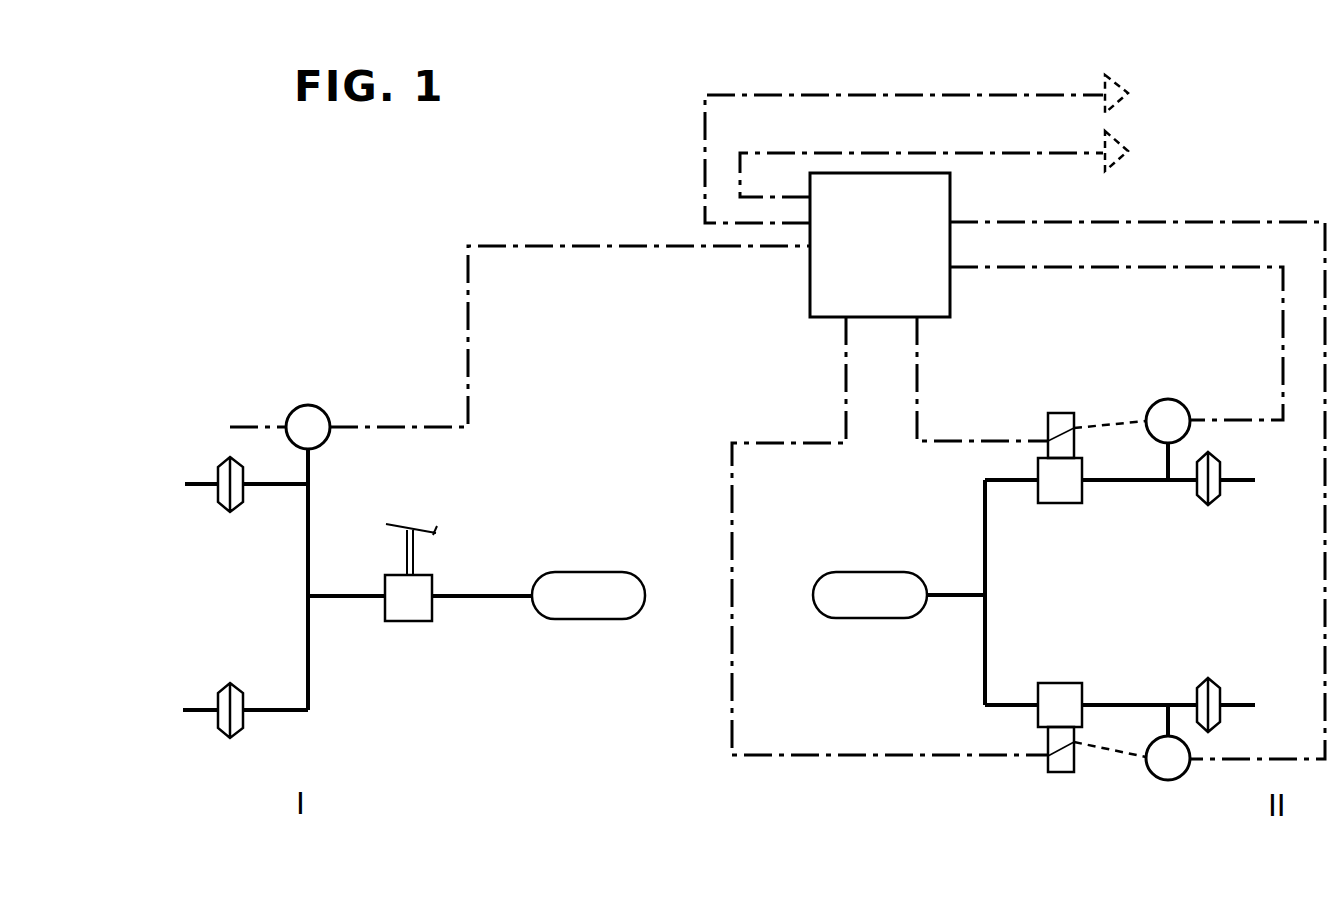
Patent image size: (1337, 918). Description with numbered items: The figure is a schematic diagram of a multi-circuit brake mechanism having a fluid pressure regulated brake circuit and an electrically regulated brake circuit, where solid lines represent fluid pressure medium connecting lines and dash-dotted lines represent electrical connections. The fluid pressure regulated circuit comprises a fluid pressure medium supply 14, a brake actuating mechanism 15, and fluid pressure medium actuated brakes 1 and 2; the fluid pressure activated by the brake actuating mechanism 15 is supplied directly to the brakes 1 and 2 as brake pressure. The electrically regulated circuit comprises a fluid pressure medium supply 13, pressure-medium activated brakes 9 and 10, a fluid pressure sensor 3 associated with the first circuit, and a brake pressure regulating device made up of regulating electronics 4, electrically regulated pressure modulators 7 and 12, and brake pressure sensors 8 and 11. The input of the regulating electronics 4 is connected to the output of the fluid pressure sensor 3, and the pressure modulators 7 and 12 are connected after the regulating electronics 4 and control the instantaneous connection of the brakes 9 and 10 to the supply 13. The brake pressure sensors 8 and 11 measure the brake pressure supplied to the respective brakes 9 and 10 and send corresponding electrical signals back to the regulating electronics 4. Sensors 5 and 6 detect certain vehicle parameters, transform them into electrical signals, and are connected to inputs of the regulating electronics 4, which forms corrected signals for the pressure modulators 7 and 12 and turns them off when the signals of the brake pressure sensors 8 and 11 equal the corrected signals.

The fluid pressure medium actuated brake 1 is at (226, 683).
The fluid pressure medium actuated brake 2 is at (226, 462).
The fluid pressure sensor 3 is at (308, 405).
The regulating electronics 4 is at (808, 292).
The sensor 5 is at (1130, 150).
The sensor 6 is at (1130, 92).
The electrically regulated pressure modulator 7 is at (1068, 398).
The brake pressure sensor 8 is at (1185, 405).
The pressure-medium activated brake 9 is at (1215, 505).
The pressure-medium activated brake 10 is at (1222, 688).
The brake pressure sensor 11 is at (1168, 780).
The electrically regulated pressure modulator 12 is at (1066, 787).
The fluid pressure medium supply 13 is at (868, 620).
The fluid pressure medium supply 14 is at (596, 620).
The brake actuating mechanism 15 is at (411, 637).